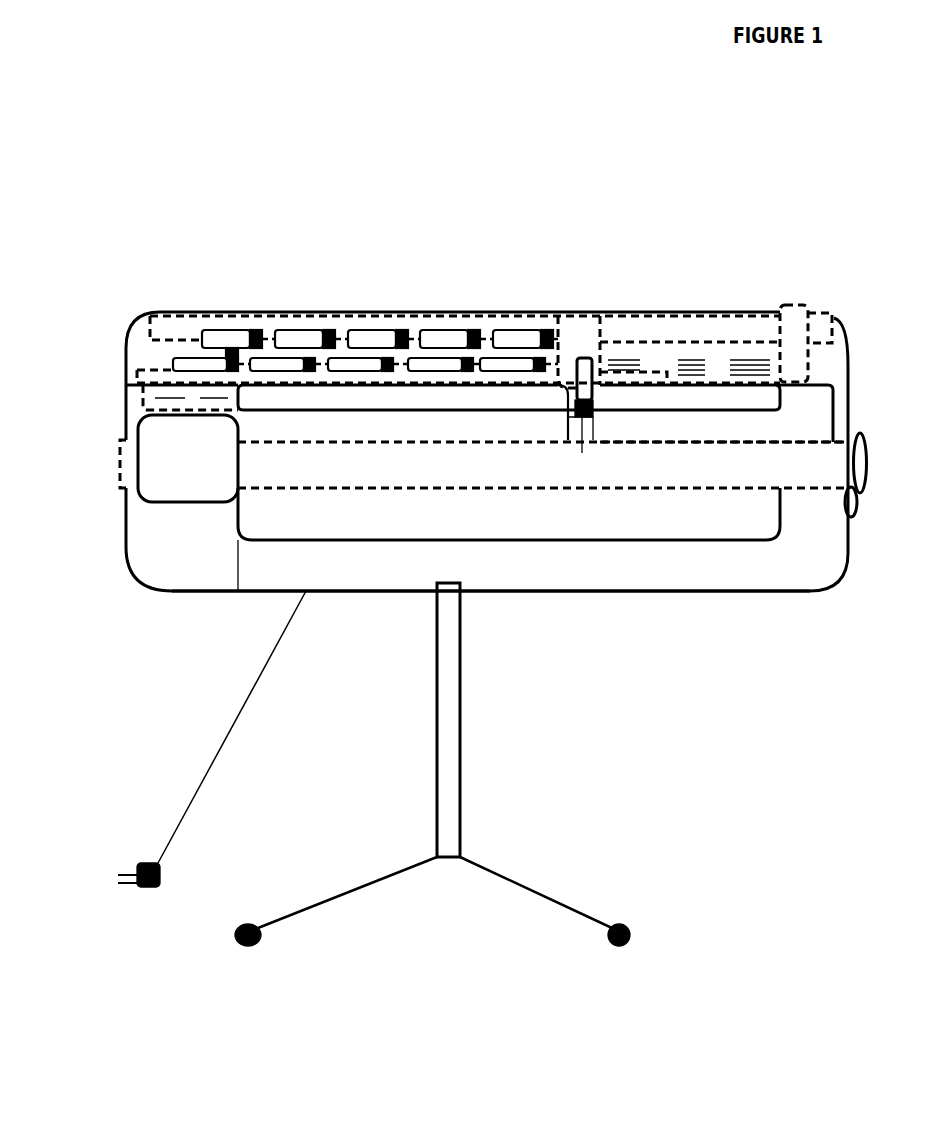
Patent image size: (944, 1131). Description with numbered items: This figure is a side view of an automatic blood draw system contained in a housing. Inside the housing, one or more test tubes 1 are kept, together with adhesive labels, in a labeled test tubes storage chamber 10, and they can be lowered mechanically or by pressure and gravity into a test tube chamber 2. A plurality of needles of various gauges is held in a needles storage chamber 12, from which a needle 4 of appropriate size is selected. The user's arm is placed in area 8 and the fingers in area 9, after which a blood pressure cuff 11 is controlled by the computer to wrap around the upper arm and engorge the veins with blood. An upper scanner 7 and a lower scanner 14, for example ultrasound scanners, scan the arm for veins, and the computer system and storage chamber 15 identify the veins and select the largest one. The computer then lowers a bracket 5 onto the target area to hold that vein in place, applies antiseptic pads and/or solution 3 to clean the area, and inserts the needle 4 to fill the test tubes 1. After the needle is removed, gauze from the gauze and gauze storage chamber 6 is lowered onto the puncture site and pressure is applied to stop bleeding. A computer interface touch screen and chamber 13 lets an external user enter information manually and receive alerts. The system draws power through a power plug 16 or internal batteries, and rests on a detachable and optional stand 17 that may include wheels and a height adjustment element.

The test tubes 1 is at (227, 340).
The test tube chamber 2 is at (577, 342).
The antiseptic pads and/or solution 3 is at (676, 408).
The needle 4 is at (572, 450).
The bracket 5 is at (566, 440).
The gauze and gauze storage chamber 6 is at (790, 347).
The upper scanner 7 is at (640, 362).
The area for user's arm 8 is at (750, 468).
The area for user's fingers 9 is at (853, 468).
The labeled test tubes storage chamber 10 is at (853, 464).
The blood pressure cuff 11 is at (190, 461).
The needles storage chamber 12 is at (167, 398).
The computer interface touch screen and chamber 13 is at (167, 547).
The lower scanner 14 is at (440, 520).
The computer system and storage chamber 15 is at (322, 577).
The power plug 16 is at (140, 858).
The detachable and optional stand 17 is at (433, 752).